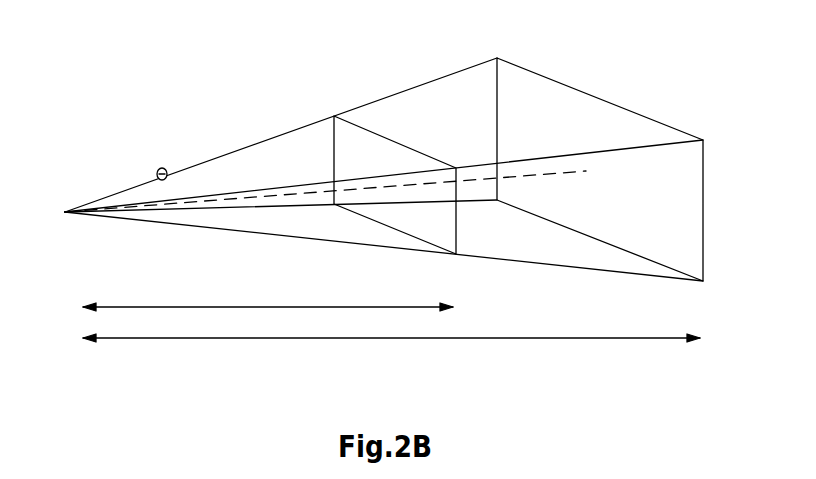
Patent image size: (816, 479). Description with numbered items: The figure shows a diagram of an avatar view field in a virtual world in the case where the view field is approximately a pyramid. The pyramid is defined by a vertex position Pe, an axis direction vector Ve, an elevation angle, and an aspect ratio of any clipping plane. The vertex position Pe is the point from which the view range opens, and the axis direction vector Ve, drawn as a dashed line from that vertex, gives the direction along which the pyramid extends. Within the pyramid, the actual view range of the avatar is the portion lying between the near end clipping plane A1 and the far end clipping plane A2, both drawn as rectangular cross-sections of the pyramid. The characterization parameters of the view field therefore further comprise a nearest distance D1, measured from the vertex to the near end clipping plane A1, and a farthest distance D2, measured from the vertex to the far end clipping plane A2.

The vertex position Pe is at (55, 197).
The near end clipping plane A1 is at (395, 182).
The far end clipping plane A2 is at (600, 169).
The axis direction vector Ve is at (325, 191).
The nearest distance D1 is at (268, 300).
The farthest distance D2 is at (391, 330).